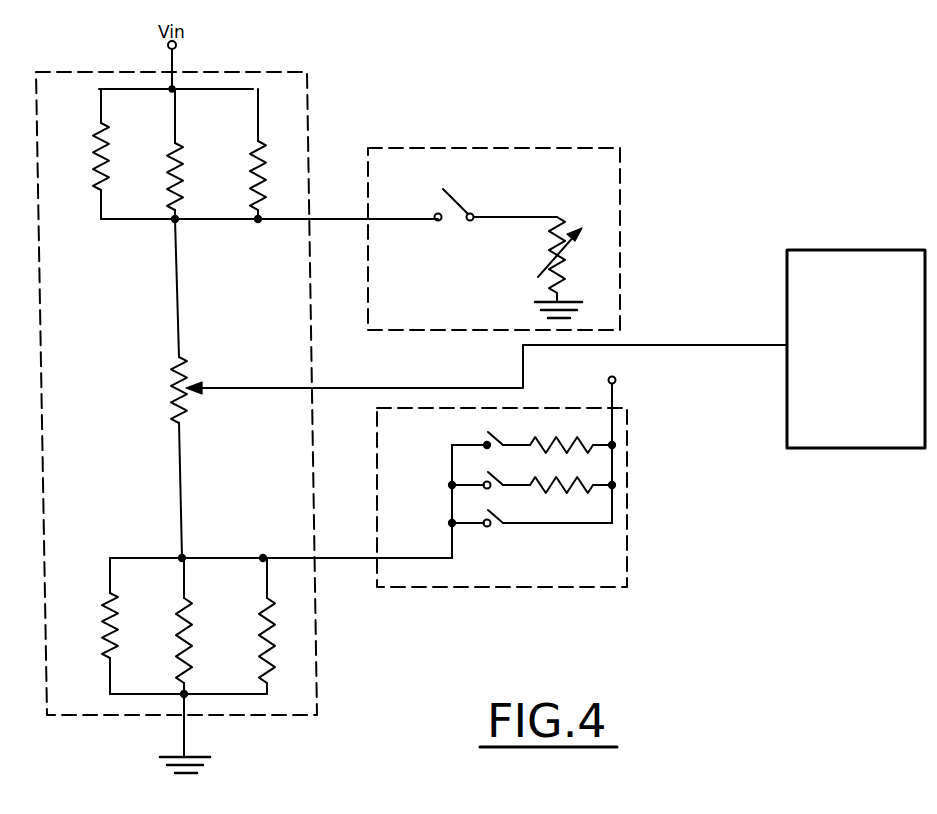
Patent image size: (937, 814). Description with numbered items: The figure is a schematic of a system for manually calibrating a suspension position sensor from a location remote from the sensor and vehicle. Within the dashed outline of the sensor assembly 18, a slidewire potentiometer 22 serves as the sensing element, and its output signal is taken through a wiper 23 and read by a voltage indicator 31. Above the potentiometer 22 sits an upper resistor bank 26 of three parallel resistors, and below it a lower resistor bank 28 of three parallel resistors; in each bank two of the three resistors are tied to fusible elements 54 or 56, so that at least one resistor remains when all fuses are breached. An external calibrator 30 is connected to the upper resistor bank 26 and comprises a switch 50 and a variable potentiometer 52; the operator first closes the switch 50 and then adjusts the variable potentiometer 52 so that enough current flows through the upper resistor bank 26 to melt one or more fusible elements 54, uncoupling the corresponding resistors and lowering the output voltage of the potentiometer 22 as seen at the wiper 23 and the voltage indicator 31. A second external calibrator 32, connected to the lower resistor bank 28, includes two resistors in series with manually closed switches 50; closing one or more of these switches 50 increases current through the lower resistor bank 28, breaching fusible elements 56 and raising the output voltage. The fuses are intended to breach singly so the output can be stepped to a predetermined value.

The sensor assembly 18 is at (318, 657).
The slidewire potentiometer 22 is at (173, 378).
The wiper 23 is at (258, 387).
The upper resistor bank 26 is at (248, 129).
The lower resistor bank 28 is at (257, 664).
The external calibrator 30 is at (499, 215).
The voltage indicator 31 is at (851, 249).
The external calibrator 32 is at (590, 589).
The switch 50 is at (460, 197).
The variable potentiometer 52 is at (548, 241).
The fusible elements 54 is at (258, 100).
The fusible elements 56 is at (267, 585).